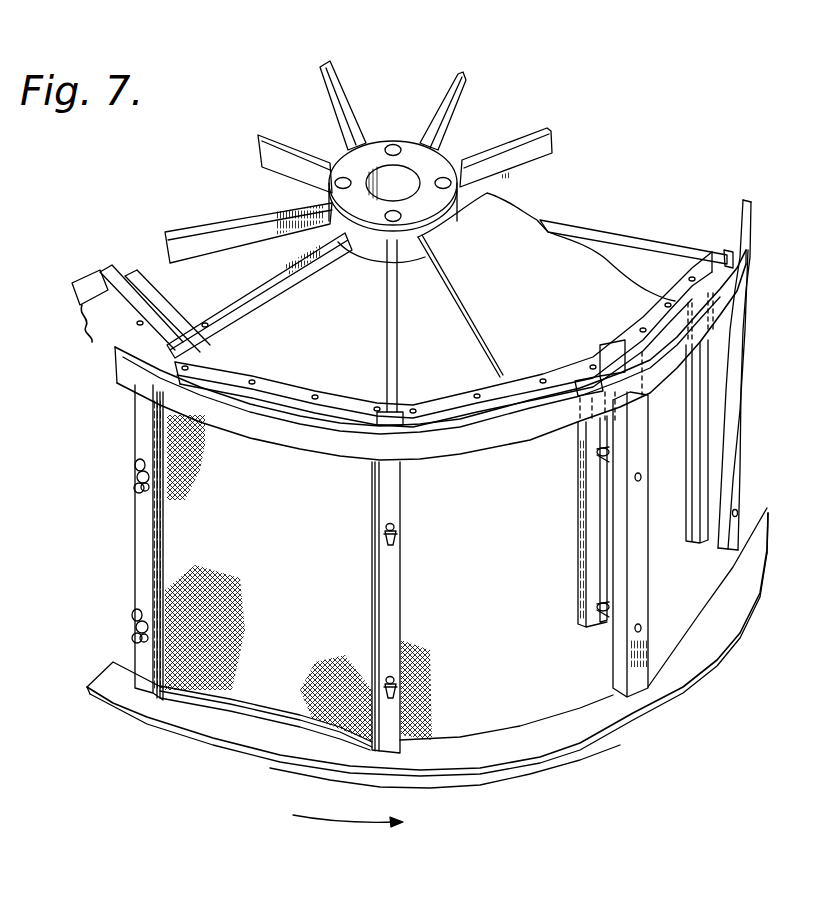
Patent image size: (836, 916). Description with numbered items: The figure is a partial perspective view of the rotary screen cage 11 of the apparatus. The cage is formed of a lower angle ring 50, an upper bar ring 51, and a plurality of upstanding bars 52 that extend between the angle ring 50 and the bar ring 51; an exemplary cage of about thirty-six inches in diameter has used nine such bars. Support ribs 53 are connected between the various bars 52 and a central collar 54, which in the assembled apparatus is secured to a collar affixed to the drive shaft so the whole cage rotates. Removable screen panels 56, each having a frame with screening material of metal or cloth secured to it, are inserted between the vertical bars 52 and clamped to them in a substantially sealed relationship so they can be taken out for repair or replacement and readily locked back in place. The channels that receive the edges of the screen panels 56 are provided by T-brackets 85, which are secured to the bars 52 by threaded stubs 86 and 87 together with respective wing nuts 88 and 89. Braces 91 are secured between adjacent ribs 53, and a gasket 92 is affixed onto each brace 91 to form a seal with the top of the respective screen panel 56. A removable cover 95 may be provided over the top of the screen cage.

The screen cage 11 is at (619, 226).
The lower angle ring 50 is at (177, 715).
The upper bar ring 51 is at (313, 445).
The upstanding bars 52 is at (140, 582).
The support ribs 53 is at (250, 214).
The central collar 54 is at (435, 165).
The screen panels 56 is at (277, 676).
The T-brackets 85 is at (580, 533).
The threaded stub 86 is at (133, 480).
The threaded stub 87 is at (133, 633).
The wing nut 88 is at (133, 492).
The wing nut 89 is at (133, 613).
The braces 91 is at (452, 378).
The gasket 92 is at (76, 293).
The removable cover 95 is at (478, 240).